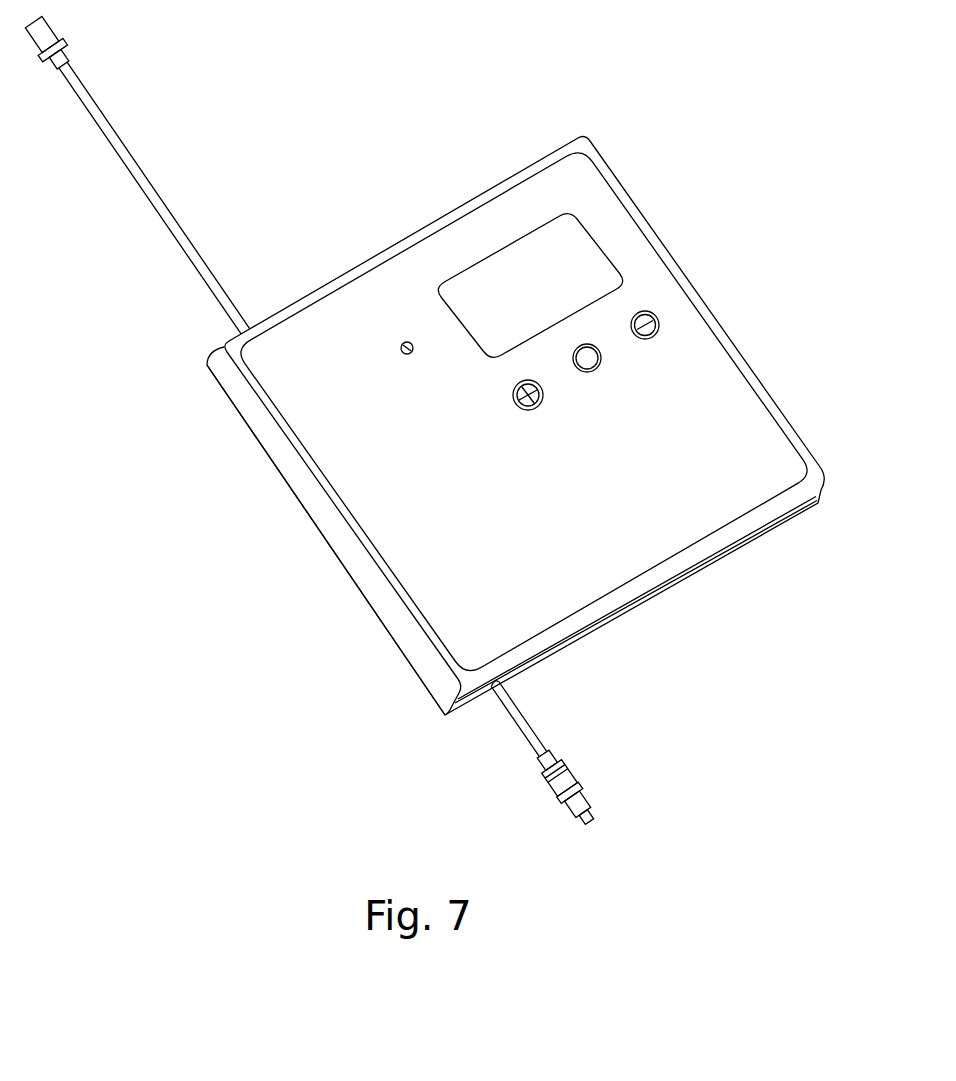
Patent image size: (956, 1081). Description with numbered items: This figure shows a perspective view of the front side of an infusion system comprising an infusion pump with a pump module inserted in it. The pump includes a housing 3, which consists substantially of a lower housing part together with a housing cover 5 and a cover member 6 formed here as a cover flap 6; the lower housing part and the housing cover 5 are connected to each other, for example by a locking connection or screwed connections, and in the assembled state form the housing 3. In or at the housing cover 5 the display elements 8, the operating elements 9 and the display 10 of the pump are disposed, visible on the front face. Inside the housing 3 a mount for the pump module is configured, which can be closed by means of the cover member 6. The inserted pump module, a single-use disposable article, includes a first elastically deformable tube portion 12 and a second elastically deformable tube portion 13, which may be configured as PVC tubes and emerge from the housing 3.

The housing 3 is at (787, 417).
The housing cover 5 is at (717, 387).
The cover member 6 is at (308, 510).
The display elements 8 is at (405, 343).
The operating elements 9 is at (663, 322).
The display 10 is at (567, 237).
The first elastically deformable tube portion 12 is at (128, 152).
The second elastically deformable tube portion 13 is at (520, 733).